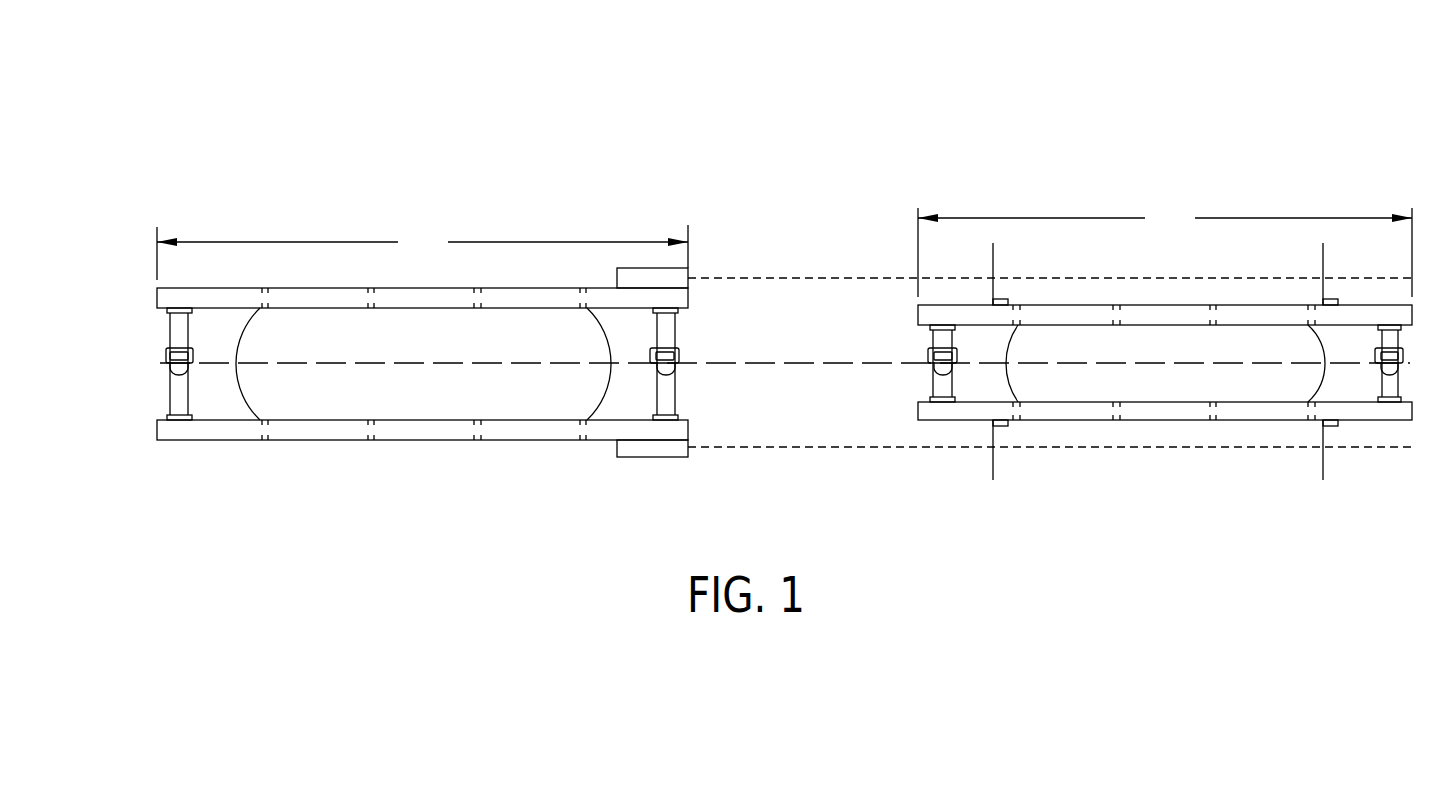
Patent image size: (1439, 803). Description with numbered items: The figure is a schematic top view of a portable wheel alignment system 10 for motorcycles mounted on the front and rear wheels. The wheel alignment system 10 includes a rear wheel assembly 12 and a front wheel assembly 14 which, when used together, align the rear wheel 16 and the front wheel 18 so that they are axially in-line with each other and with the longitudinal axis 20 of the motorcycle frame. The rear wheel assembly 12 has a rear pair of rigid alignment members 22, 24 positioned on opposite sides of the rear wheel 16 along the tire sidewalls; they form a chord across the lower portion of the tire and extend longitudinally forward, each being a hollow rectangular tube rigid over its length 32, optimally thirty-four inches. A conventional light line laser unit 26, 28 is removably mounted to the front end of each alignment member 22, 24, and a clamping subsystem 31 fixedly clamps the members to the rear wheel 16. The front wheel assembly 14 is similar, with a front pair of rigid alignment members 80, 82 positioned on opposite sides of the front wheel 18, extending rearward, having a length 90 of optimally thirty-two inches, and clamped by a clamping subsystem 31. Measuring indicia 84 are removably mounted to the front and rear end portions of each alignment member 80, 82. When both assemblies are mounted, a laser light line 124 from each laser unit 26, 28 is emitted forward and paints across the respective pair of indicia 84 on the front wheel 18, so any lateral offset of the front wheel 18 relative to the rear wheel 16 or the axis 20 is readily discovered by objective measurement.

The portable wheel alignment system 10 is at (536, 110).
The rear wheel assembly 12 is at (269, 223).
The front wheel assembly 14 is at (1114, 203).
The rear wheel 16 is at (448, 400).
The front wheel 18 is at (1243, 378).
The longitudinal axis 20 is at (757, 365).
The first alignment member 22 is at (218, 440).
The second alignment member 24 is at (165, 298).
The light line laser unit 26 is at (655, 458).
The light line laser unit 28 is at (617, 273).
The clamping subsystem 31 is at (165, 378).
The length of alignment member 32 is at (422, 252).
The third alignment member 80 is at (1135, 420).
The fourth alignment member 82 is at (1135, 305).
The measuring indicia 84 is at (993, 253).
The length of front alignment member 90 is at (1165, 249).
The laser light line 124 is at (790, 277).